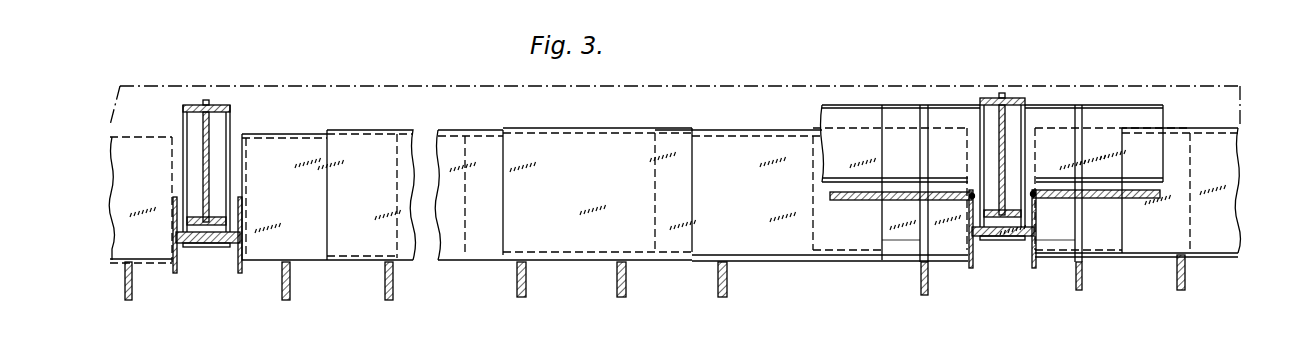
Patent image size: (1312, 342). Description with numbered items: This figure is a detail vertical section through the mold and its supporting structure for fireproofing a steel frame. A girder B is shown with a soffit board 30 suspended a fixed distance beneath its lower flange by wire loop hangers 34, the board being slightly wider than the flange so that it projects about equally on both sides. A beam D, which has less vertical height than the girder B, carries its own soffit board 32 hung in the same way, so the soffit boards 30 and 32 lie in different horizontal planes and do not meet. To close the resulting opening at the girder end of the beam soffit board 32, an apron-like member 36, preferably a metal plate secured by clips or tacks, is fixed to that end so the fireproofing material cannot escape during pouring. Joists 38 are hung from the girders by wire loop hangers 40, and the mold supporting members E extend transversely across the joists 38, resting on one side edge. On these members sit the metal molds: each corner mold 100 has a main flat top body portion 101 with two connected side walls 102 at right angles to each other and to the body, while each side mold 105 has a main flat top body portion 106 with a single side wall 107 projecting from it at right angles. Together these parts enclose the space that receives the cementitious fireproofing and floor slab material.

The soffit board 30 is at (205, 243).
The soffit board 32 is at (858, 201).
The wire loop hanger 34 is at (232, 127).
The apron-like member 36 is at (176, 276).
The joist 38 is at (385, 296).
The wire loop hanger 40 is at (915, 230).
The corner mold 100 is at (1132, 270).
The main flat top body portion 101 is at (146, 137).
The side wall 102 is at (122, 153).
The side mold 105 is at (514, 137).
The main flat top body portion 106 is at (367, 131).
The side wall 107 is at (581, 146).
The girder B is at (196, 103).
The beam D is at (826, 107).
The mold supporting member E is at (325, 262).